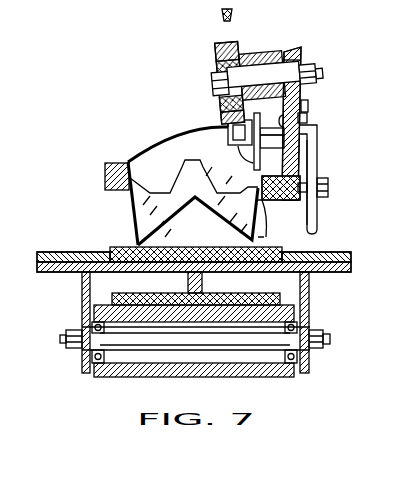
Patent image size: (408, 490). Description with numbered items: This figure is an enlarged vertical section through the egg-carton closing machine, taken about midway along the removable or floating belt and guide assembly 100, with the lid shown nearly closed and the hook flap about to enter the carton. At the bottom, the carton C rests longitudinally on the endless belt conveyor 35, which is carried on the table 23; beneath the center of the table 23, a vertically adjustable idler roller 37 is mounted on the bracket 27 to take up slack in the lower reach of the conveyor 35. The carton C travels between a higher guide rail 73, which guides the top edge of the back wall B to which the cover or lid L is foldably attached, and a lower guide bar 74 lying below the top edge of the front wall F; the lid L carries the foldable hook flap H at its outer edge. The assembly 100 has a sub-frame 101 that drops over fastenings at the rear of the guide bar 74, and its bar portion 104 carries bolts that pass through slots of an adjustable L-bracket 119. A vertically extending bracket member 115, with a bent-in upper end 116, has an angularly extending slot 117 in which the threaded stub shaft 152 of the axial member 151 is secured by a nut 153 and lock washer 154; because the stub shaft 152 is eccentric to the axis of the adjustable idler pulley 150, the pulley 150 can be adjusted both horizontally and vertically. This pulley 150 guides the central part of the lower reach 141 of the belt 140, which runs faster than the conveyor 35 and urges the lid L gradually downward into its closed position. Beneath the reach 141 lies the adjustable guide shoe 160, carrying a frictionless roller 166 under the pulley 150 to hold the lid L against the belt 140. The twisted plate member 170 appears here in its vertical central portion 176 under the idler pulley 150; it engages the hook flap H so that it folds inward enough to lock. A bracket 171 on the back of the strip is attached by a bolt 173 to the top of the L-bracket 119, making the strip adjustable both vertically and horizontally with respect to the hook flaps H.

The table 23 is at (339, 273).
The bracket 27 is at (82, 297).
The endless belt conveyor 35 is at (176, 253).
The idler roller 37 is at (281, 377).
The guide rail 73 is at (106, 166).
The guide bar 74 is at (270, 203).
The removable endless belt and guide assembly 100 is at (320, 38).
The sub-frame 101 is at (312, 98).
The bar portion 104 is at (292, 182).
The bracket member 115 is at (304, 108).
The bent inwardly upper end 116 is at (289, 50).
The angularly extending slot 117 is at (329, 189).
The L-bracket 119 is at (318, 212).
The belt 140 is at (233, 16).
The lower reach 141 is at (228, 118).
The adjustable idler pulley 150 is at (219, 52).
The axial member 151 is at (210, 81).
The stub shaft 152 is at (325, 78).
The nut 153 is at (318, 64).
The lock washer 154 is at (302, 57).
The adjustable guide shoe 160 is at (238, 133).
The frictionless roller 166 is at (228, 125).
The twisted plate member 170 is at (283, 124).
The bracket 171 is at (312, 131).
The bolt 173 is at (300, 119).
The central portion 176 is at (194, 196).
The lid L is at (145, 149).
The back wall B is at (131, 196).
The egg carton C is at (133, 220).
The hook flap H is at (255, 155).
The front wall F is at (264, 223).